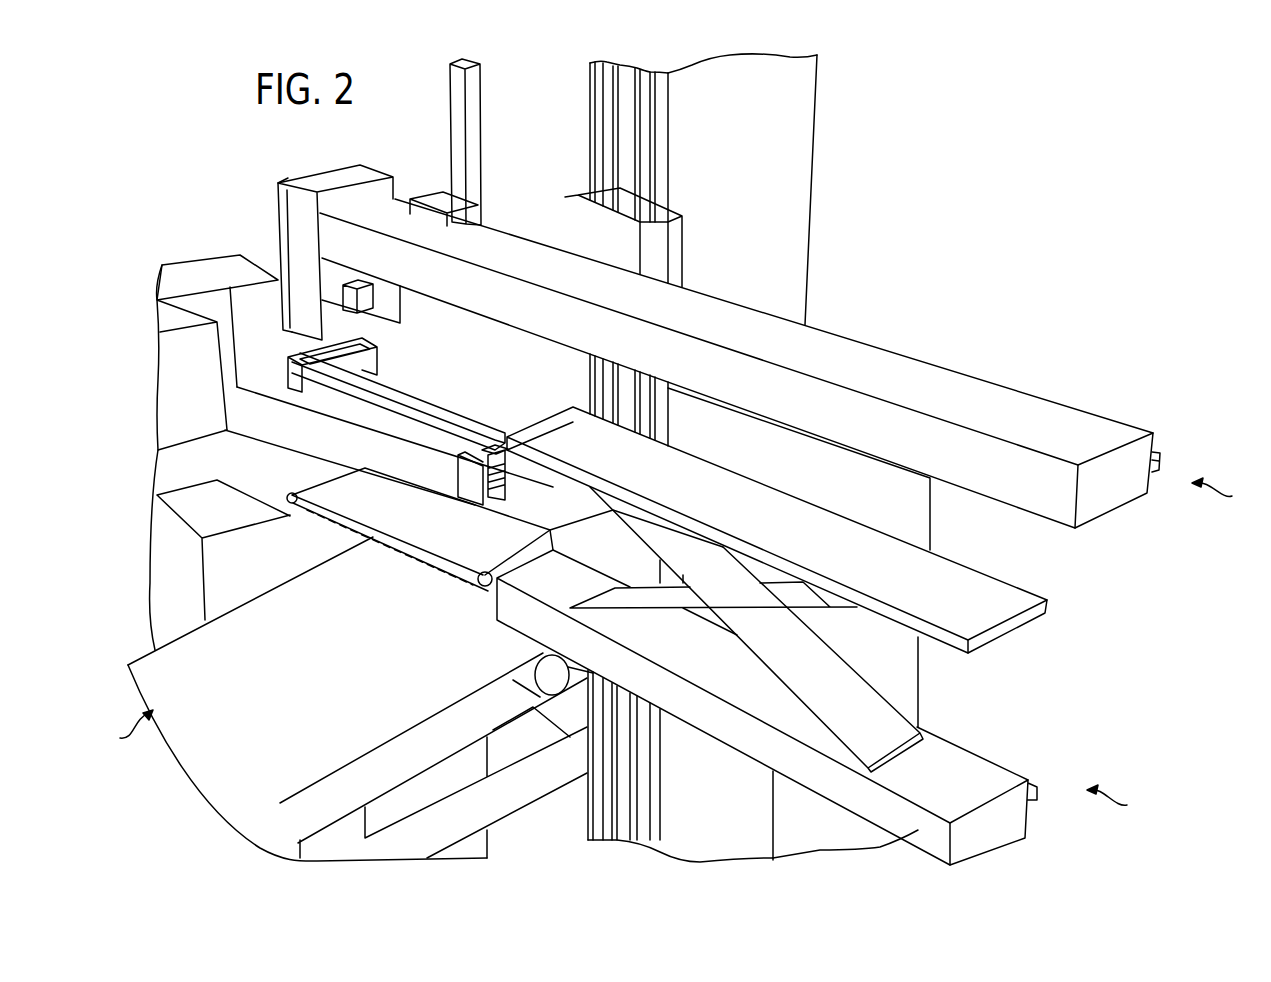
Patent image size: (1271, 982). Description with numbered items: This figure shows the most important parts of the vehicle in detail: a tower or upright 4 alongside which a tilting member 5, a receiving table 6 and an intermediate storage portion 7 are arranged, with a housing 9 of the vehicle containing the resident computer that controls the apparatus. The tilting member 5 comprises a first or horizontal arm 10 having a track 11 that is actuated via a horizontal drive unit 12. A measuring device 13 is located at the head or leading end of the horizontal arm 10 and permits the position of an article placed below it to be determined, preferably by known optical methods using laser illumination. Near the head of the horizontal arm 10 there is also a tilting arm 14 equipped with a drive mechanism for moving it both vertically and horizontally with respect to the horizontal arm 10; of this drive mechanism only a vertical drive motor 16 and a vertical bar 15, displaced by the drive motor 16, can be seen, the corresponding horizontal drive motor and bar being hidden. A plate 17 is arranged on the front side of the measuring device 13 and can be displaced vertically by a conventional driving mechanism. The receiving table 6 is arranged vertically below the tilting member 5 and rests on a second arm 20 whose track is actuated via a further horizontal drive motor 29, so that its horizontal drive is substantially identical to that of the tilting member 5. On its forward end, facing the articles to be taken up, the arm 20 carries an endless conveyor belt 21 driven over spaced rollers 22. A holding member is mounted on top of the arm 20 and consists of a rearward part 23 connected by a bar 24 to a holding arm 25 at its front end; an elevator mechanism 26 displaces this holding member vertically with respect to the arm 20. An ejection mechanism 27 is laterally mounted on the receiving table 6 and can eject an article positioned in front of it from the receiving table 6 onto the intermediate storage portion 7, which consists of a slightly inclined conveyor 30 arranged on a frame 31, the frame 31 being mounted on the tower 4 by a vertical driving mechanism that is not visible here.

The tower or upright 4 is at (803, 217).
The tilting member 5 is at (1221, 498).
The receiving table 6 is at (1118, 804).
The intermediate storage portion 7 is at (329, 505).
The housing 9 is at (917, 515).
The horizontal arm 10 is at (870, 356).
The track 11 is at (1162, 453).
The horizontal drive unit 12 is at (633, 243).
The measuring device 13 is at (337, 177).
The tilting arm 14 is at (343, 293).
The vertical bar 15 is at (473, 93).
The vertical drive motor 16 is at (433, 203).
The plate 17 is at (277, 200).
The second arm 20 is at (997, 777).
The endless conveyor belt 21 is at (427, 530).
The rollers 22 is at (292, 503).
The rearward part of holding member 23 is at (1017, 601).
The bar 24 is at (432, 407).
The holding arm 25 is at (373, 350).
The elevator mechanism 26 is at (885, 708).
The ejection mechanism 27 is at (522, 473).
The horizontal drive motor 29 is at (573, 497).
The conveyor 30 is at (288, 739).
The frame 31 is at (502, 807).